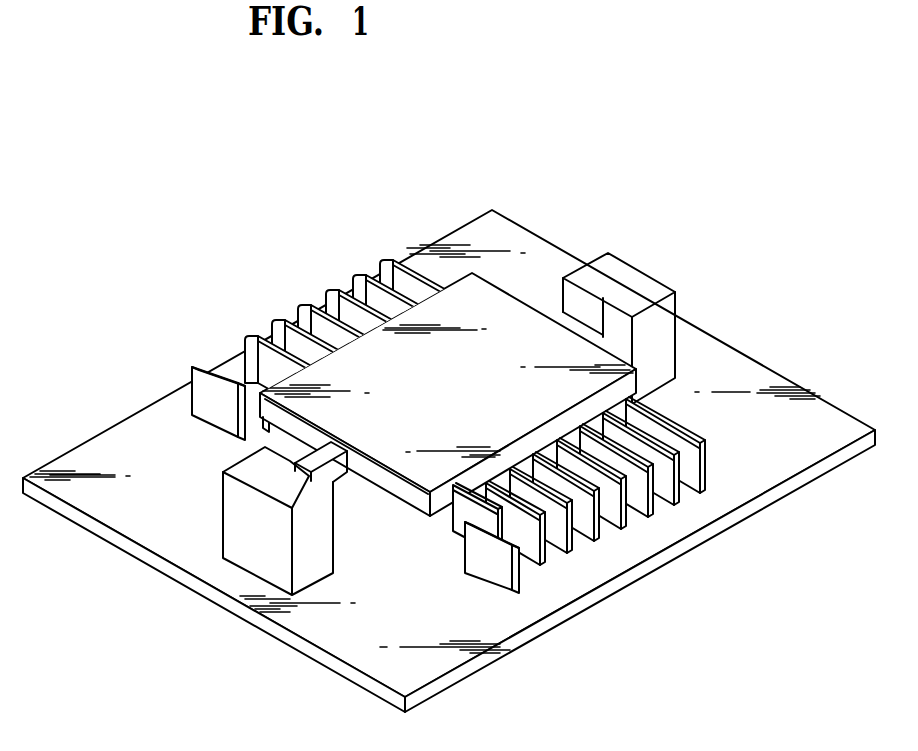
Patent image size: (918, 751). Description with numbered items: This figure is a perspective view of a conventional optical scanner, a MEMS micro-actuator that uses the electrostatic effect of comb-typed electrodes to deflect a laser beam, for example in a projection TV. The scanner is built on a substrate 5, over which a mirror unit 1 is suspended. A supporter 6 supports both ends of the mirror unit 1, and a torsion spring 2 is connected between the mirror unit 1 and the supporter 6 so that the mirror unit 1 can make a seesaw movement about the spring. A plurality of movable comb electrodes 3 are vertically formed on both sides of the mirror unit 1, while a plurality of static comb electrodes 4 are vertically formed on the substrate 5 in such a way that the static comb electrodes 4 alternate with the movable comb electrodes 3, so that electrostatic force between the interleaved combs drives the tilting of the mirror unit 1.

The mirror unit 1 is at (505, 308).
The torsion spring 2 is at (587, 297).
The movable comb electrodes 3 is at (252, 377).
The static comb electrodes 4 is at (210, 405).
The substrate 5 is at (340, 633).
The supporter 6 is at (643, 288).